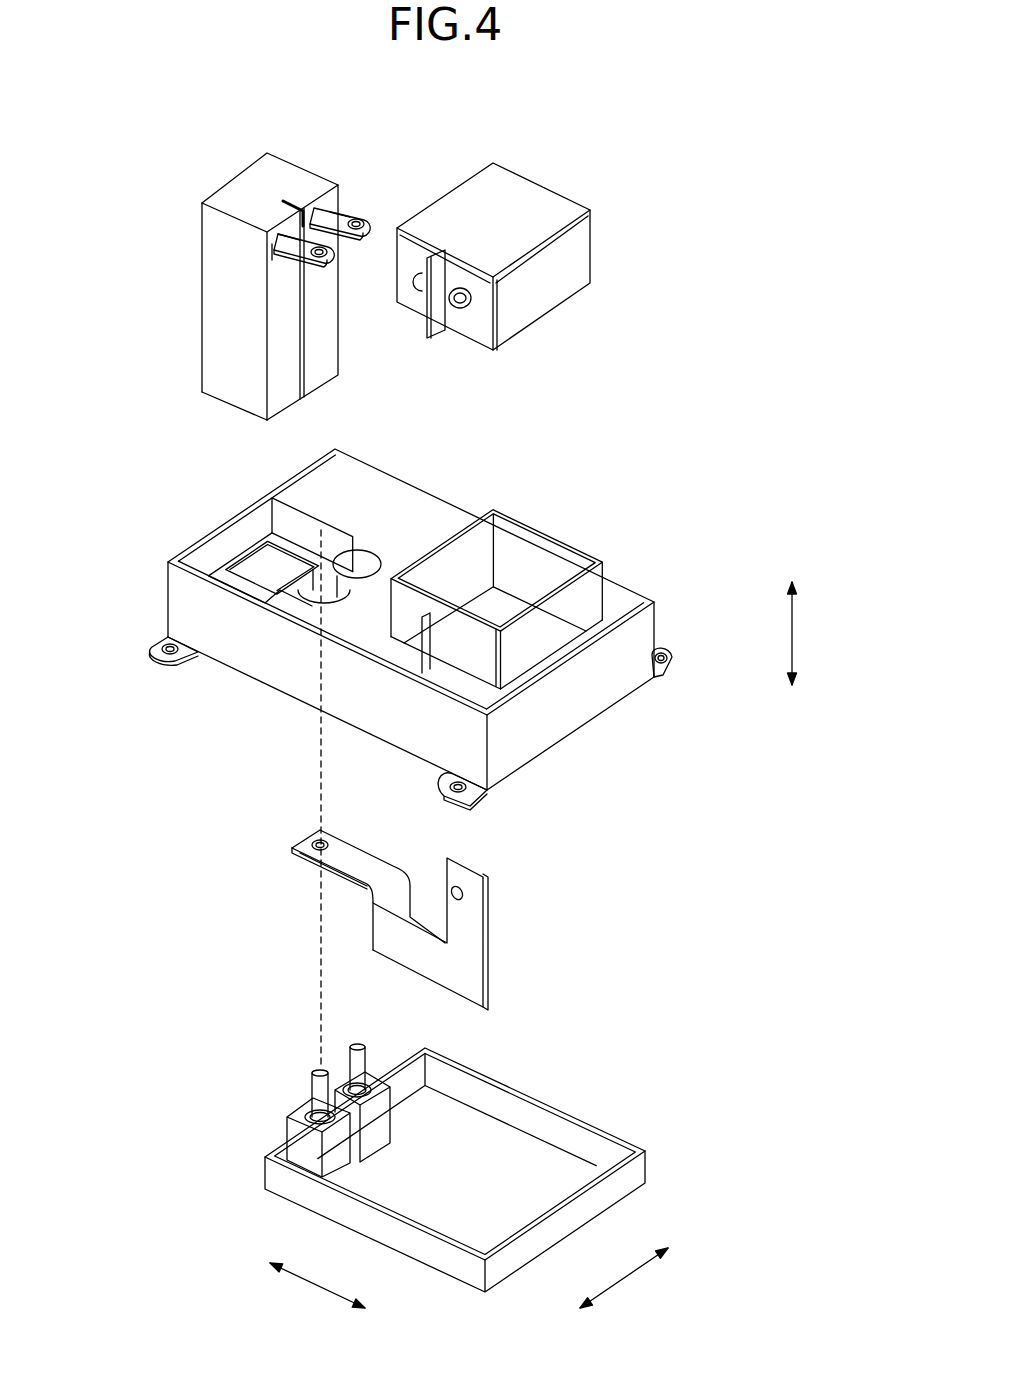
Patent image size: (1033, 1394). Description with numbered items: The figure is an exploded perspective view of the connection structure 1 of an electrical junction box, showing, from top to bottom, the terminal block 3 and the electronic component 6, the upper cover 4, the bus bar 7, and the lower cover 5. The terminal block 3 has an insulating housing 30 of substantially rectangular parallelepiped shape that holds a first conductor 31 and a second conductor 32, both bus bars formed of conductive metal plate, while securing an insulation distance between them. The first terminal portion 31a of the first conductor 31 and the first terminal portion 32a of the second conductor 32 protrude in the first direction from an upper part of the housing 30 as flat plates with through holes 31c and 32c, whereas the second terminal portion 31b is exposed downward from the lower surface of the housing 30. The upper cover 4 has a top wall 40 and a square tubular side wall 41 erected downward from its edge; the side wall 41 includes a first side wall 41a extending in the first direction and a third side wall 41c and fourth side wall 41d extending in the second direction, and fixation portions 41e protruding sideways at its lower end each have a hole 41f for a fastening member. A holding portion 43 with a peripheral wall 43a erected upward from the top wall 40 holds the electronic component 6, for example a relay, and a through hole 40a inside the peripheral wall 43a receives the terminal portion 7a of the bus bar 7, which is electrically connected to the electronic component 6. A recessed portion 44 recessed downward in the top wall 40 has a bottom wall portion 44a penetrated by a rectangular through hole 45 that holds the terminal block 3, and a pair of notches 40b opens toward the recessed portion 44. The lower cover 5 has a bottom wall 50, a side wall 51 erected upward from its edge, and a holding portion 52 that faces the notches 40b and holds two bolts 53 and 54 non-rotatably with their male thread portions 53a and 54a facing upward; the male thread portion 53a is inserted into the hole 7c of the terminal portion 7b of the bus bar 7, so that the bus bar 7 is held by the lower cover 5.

The connection structure 1 is at (150, 245).
The terminal block 3 is at (232, 192).
The housing 30 is at (274, 168).
The first conductor 31 is at (296, 232).
The first terminal portion 31a is at (289, 236).
The second terminal portion 31b is at (222, 412).
The through hole 31c is at (323, 260).
The second conductor 32 is at (328, 208).
The first terminal portion 32a is at (343, 214).
The through hole 32c is at (357, 230).
The electronic component 6 is at (532, 203).
The upper cover 4 is at (622, 596).
The top wall 40 is at (425, 515).
The through hole 40a is at (460, 680).
The notches 40b is at (330, 578).
The side wall 41 is at (222, 670).
The first side wall 41a is at (292, 670).
The third side wall 41c is at (217, 530).
The fourth side wall 41d is at (595, 700).
The fixation portions 41e is at (152, 655).
The hole 41f is at (165, 645).
The holding portion 43 is at (538, 515).
The peripheral wall 43a is at (512, 530).
The recessed portion 44 is at (305, 512).
The bottom wall portion 44a is at (258, 540).
The through hole 45 is at (243, 557).
The bus bar 7 is at (493, 932).
The terminal portion 7a is at (470, 908).
The terminal portion 7b is at (340, 850).
The hole 7c is at (295, 850).
The lower cover 5 is at (570, 1165).
The bottom wall 50 is at (505, 1148).
The side wall 51 is at (632, 1150).
The holding portion 52 is at (300, 1135).
The bolt 53 is at (293, 1110).
The male thread portion 53a is at (315, 1090).
The bolt 54 is at (378, 1082).
The male thread portion 54a is at (355, 1063).